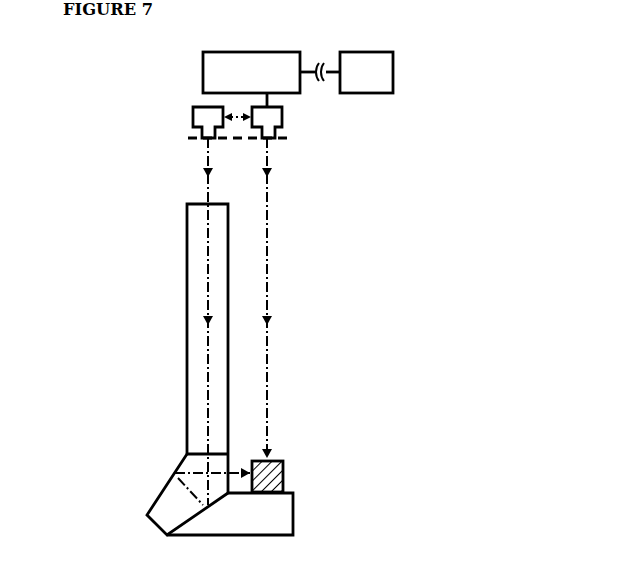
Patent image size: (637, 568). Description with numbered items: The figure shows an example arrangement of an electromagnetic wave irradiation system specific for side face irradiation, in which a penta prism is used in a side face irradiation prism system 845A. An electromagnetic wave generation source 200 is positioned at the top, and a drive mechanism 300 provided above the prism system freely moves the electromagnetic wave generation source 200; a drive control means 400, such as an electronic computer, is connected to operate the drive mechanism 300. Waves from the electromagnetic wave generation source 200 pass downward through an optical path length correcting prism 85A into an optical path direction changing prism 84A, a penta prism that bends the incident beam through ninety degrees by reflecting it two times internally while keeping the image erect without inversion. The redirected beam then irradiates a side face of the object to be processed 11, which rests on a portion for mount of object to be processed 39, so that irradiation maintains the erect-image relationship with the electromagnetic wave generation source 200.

The drive mechanism 300 is at (272, 87).
The drive control means 400 is at (385, 87).
The electromagnetic wave generation source 200 is at (283, 118).
The side face irradiation prism system 845A is at (145, 369).
The optical path length correcting prism 85A is at (186, 331).
The optical path direction changing prism 84A is at (153, 503).
The object to be processed 11 is at (283, 467).
The portion for mount of object to be processed 39 is at (288, 490).